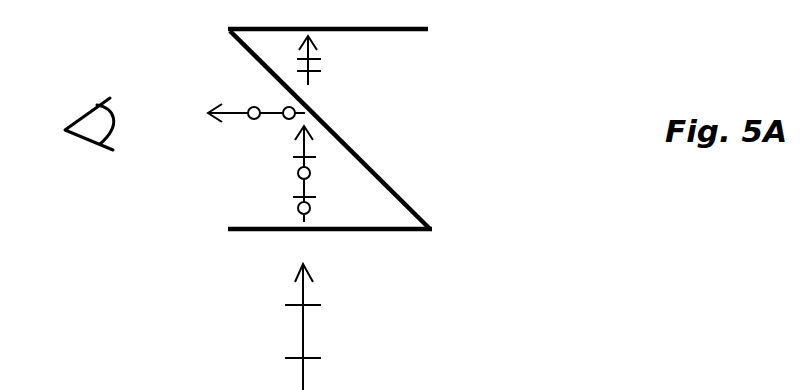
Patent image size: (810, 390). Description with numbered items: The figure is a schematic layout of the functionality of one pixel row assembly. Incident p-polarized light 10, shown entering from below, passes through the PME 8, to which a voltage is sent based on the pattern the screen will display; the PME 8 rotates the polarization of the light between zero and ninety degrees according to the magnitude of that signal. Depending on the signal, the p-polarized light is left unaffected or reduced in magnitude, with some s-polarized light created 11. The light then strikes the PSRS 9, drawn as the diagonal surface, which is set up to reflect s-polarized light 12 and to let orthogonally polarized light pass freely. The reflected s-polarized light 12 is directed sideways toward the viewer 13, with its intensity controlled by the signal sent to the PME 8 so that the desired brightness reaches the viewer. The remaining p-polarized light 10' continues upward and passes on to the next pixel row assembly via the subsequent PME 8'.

The subsequent PME 8' is at (413, 30).
The PME 8 is at (381, 205).
The PSRS 9 is at (384, 152).
The remaining p-polarized light 10' is at (466, 71).
The p-polarized light 10 is at (358, 327).
The s-polarized light created 11 is at (282, 185).
The s-polarized light 12 is at (213, 86).
The viewer 13 is at (72, 172).